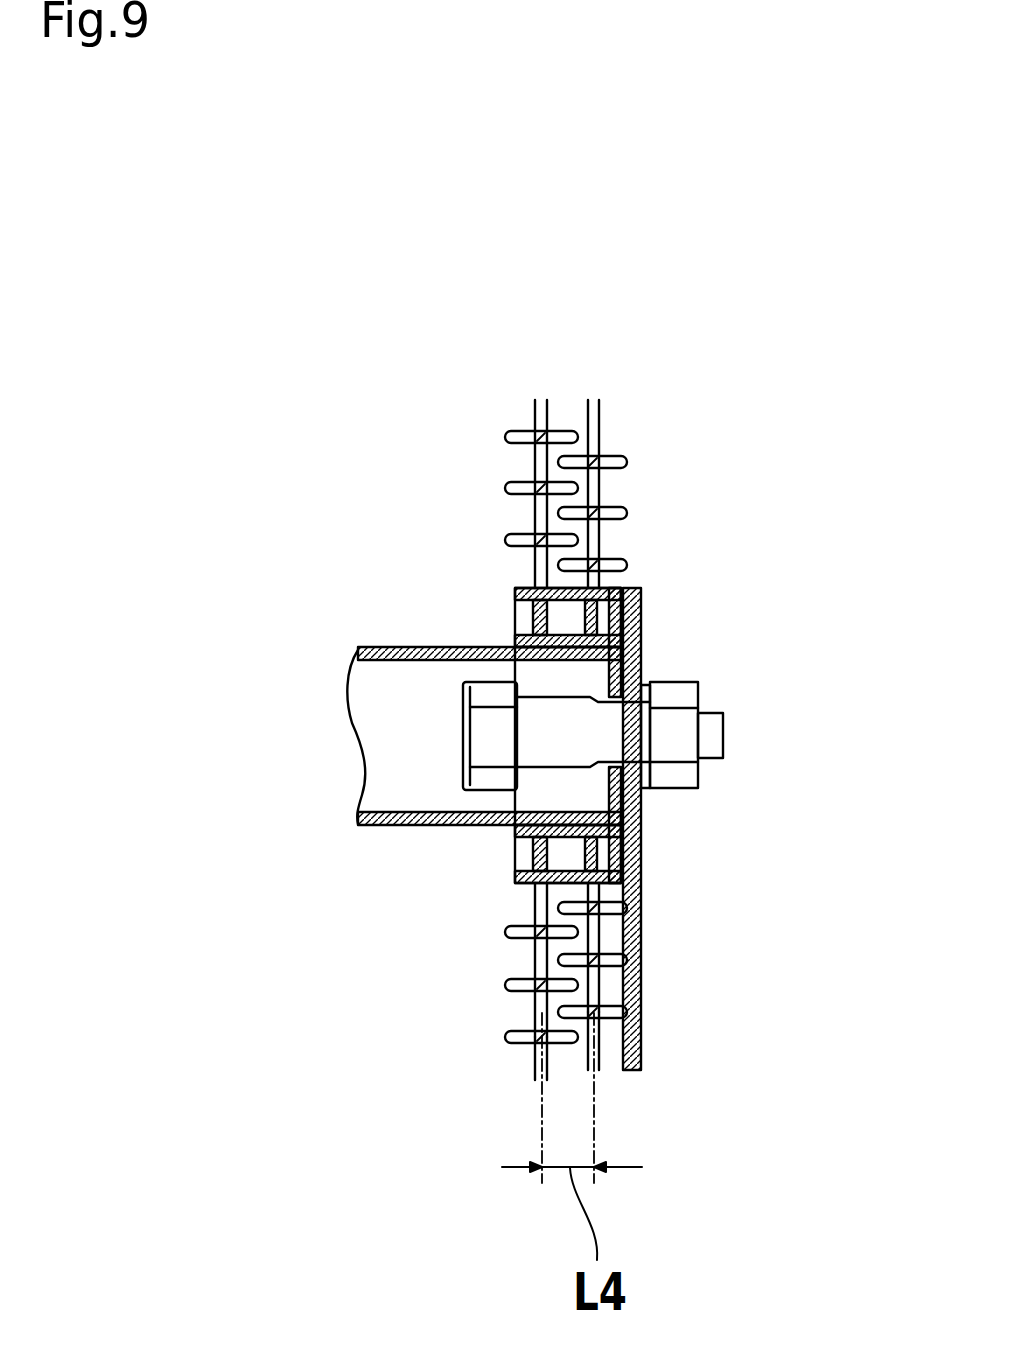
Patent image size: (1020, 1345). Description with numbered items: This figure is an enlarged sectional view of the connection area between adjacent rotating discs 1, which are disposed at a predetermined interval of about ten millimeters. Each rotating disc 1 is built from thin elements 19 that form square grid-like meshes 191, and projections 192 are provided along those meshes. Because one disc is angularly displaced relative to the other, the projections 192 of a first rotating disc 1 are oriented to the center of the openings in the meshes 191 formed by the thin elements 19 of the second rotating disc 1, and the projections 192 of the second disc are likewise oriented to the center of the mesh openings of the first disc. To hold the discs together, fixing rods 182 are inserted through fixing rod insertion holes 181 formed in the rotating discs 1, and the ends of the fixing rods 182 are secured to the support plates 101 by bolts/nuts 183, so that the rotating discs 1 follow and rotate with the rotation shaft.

The rotating disc 1 is at (493, 423).
The thin elements 19 is at (537, 432).
The square grid-like meshes 191 is at (525, 1050).
The projections 192 is at (548, 436).
The support plates 101 is at (643, 930).
The fixing rod insertion holes 181 is at (512, 666).
The fixing rods 182 is at (387, 827).
The bolts/nuts 183 is at (712, 702).